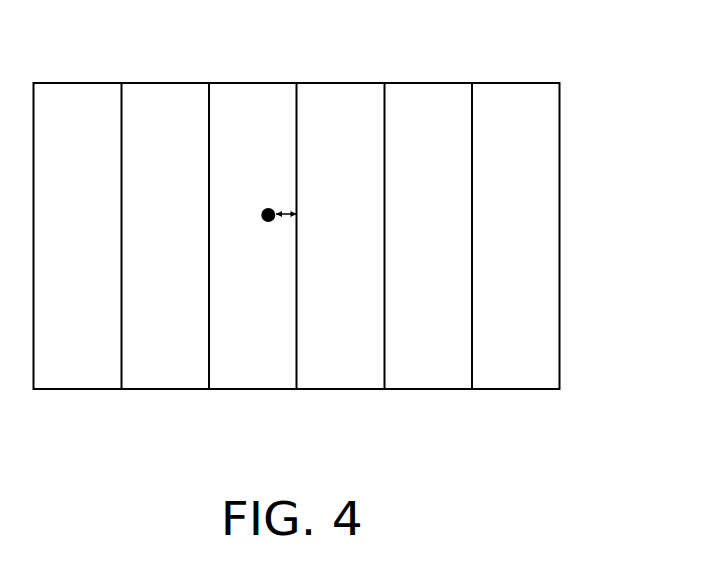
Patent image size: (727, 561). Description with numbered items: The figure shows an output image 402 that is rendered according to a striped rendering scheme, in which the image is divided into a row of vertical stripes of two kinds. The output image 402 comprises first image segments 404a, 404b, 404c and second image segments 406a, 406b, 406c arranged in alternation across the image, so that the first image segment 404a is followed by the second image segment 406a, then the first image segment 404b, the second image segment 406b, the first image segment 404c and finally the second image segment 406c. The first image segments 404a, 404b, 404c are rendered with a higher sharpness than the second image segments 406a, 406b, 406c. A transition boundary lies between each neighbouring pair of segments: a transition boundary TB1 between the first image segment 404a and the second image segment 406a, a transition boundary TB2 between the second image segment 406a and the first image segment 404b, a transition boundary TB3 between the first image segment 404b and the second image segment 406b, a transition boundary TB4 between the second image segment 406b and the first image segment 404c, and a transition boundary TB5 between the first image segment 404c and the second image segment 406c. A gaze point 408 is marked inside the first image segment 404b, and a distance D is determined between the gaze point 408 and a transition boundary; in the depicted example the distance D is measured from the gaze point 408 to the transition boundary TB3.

The output image 402 is at (560, 146).
The first image segment 404a is at (106, 353).
The first image segment 404b is at (224, 353).
The first image segment 404c is at (399, 353).
The second image segment 406a is at (192, 353).
The second image segment 406b is at (370, 353).
The second image segment 406c is at (487, 353).
The gaze point 408 is at (268, 209).
The transition boundary TB1 is at (122, 372).
The transition boundary TB2 is at (209, 372).
The transition boundary TB3 is at (296, 370).
The transition boundary TB4 is at (384, 372).
The transition boundary TB5 is at (472, 372).
The distance D is at (286, 203).